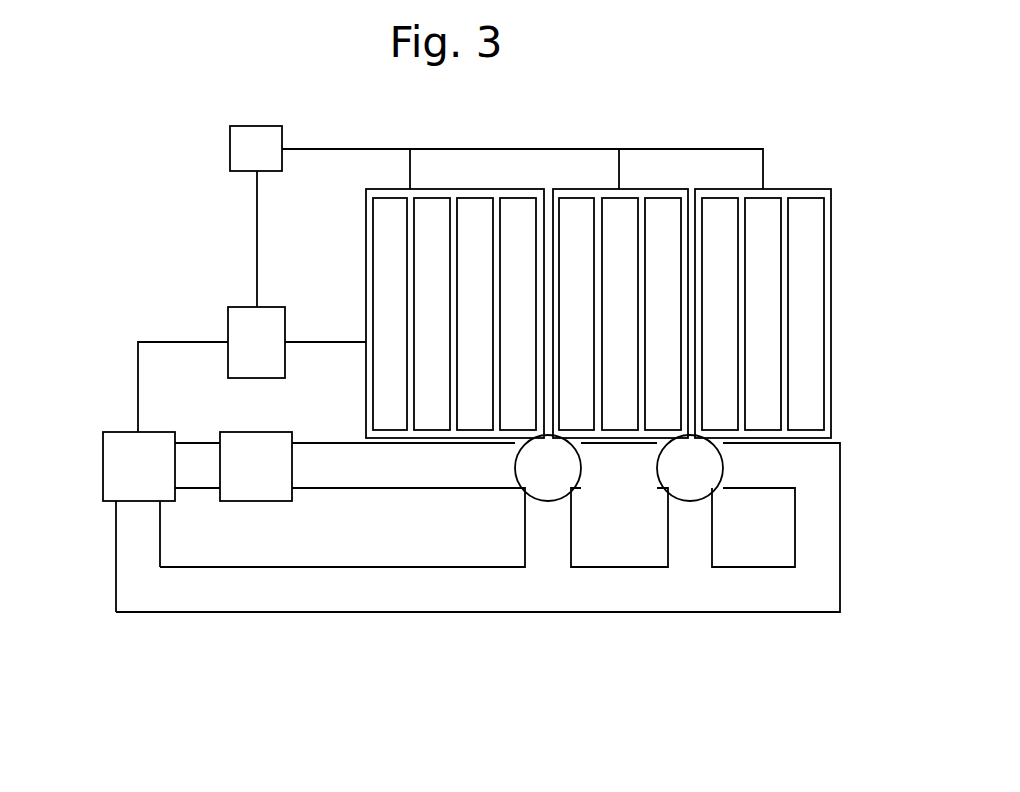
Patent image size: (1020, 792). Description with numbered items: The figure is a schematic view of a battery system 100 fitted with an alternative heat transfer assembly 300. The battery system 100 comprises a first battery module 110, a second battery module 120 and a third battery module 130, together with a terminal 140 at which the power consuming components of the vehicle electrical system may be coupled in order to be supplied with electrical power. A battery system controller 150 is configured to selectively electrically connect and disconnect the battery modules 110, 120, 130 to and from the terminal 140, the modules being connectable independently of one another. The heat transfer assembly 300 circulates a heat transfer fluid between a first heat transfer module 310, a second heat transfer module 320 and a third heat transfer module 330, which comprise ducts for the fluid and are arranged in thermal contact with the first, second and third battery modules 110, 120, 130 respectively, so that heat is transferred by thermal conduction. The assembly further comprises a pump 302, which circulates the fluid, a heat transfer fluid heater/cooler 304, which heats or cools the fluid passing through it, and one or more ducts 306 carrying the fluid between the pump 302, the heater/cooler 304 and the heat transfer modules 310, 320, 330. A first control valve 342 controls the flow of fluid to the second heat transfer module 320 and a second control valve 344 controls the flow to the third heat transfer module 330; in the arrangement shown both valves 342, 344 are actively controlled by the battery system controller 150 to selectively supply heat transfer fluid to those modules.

The battery system 100 is at (677, 84).
The first battery module 110 is at (472, 189).
The second battery module 120 is at (582, 189).
The third battery module 130 is at (727, 189).
The terminal 140 is at (230, 150).
The battery system controller 150 is at (228, 316).
The heat transfer assembly 300 is at (456, 670).
The pump 302 is at (103, 452).
The heat transfer fluid heater/cooler 304 is at (242, 432).
The ducts 306 is at (153, 602).
The first heat transfer module 310 is at (422, 477).
The second heat transfer module 320 is at (625, 477).
The third heat transfer module 330 is at (760, 467).
The first control valve 342 is at (547, 487).
The second control valve 344 is at (688, 482).